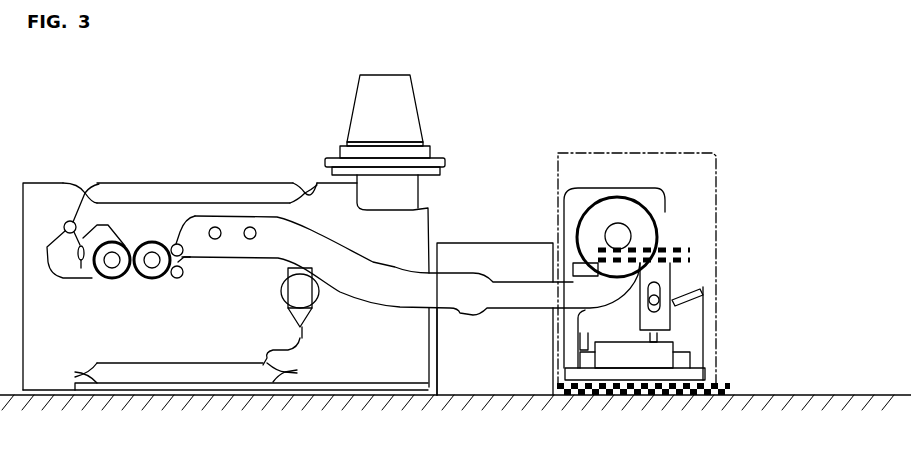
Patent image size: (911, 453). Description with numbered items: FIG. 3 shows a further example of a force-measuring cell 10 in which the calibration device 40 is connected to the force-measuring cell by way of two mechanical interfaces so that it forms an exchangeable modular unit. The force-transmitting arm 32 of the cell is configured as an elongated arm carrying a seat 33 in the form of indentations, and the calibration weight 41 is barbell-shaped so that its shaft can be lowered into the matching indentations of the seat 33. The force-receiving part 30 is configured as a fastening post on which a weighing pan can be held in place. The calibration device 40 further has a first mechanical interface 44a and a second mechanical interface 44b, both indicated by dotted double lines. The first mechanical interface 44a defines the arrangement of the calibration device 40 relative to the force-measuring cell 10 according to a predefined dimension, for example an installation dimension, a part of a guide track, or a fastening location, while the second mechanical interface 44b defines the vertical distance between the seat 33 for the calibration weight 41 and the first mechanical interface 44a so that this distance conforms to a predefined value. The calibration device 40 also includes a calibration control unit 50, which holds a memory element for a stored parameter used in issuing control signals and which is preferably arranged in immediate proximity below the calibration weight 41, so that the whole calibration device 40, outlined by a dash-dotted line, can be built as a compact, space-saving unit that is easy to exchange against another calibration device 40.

The force-measuring cell 10 is at (137, 148).
The force-receiving part 30 is at (400, 100).
The force-transmitting arm 32 is at (298, 258).
The seat 33 is at (618, 252).
The calibration device 40 is at (688, 153).
The calibration weight 41 is at (643, 235).
The first mechanical interface 44a is at (720, 388).
The second mechanical interface 44b is at (688, 247).
The calibration control unit 50 is at (665, 352).